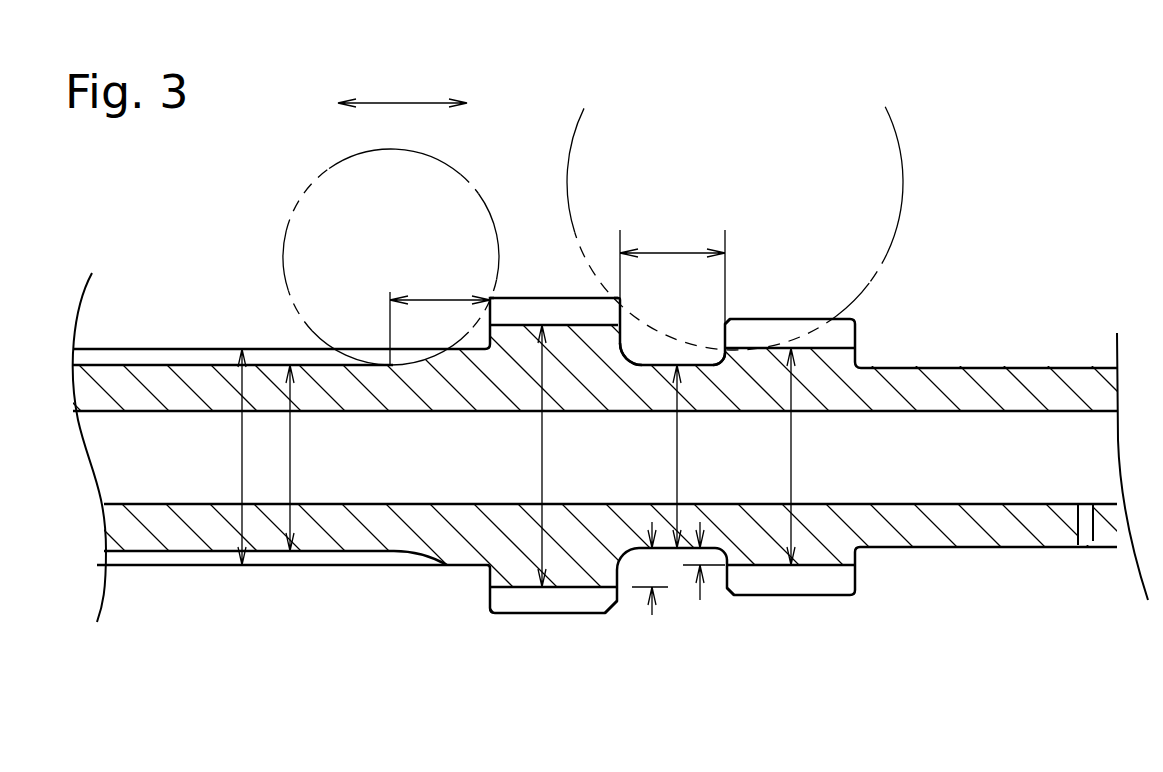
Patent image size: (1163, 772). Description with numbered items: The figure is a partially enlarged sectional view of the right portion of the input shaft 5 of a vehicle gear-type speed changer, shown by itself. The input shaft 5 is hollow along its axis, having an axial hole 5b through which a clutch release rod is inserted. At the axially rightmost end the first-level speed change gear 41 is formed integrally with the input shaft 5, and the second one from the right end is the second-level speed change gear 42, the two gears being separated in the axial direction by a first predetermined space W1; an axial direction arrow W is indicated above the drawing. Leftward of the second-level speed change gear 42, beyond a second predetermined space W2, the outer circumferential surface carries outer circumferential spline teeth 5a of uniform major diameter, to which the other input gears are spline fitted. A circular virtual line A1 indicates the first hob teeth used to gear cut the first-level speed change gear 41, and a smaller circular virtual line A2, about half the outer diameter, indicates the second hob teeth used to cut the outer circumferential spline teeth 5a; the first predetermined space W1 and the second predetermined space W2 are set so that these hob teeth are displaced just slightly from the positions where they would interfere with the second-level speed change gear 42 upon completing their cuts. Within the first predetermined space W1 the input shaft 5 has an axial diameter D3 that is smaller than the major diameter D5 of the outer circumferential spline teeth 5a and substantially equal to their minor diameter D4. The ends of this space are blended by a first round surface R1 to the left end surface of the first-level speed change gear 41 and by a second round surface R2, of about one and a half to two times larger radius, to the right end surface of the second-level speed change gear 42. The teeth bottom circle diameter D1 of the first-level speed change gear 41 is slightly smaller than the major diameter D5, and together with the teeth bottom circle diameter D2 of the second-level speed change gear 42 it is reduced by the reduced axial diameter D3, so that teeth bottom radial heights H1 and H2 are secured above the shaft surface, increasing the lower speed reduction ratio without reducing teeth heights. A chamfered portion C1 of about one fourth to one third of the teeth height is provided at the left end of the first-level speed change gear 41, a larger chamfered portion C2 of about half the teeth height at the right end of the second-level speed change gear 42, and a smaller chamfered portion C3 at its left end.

The input shaft 5 is at (960, 390).
The outer circumferential spline teeth 5a is at (270, 360).
The axial hole 5b is at (970, 500).
The first-level speed change gear 41 is at (797, 320).
The second-level speed change gear 42 is at (528, 308).
The first hob teeth A1 is at (893, 250).
The second hob teeth A2 is at (282, 258).
The width direction W is at (402, 88).
The first predetermined space W1 is at (672, 285).
The second predetermined space W2 is at (440, 316).
The teeth bottom circle diameter of the first-level speed change gear D1 is at (811, 456).
The teeth bottom circle diameter of the second-level speed change gear D2 is at (562, 456).
The axial diameter D3 is at (698, 456).
The minor diameter D4 is at (312, 458).
The major diameter D5 is at (219, 457).
The teeth bottom radial height of the first-level speed change gear H1 is at (701, 584).
The teeth bottom radial height of the second-level speed change gear H2 is at (654, 590).
The chamfered portion C1 is at (735, 325).
The chamfered portion C2 is at (617, 300).
The chamfered portion C3 is at (490, 298).
The first round surface R1 is at (716, 358).
The second round surface R2 is at (630, 360).